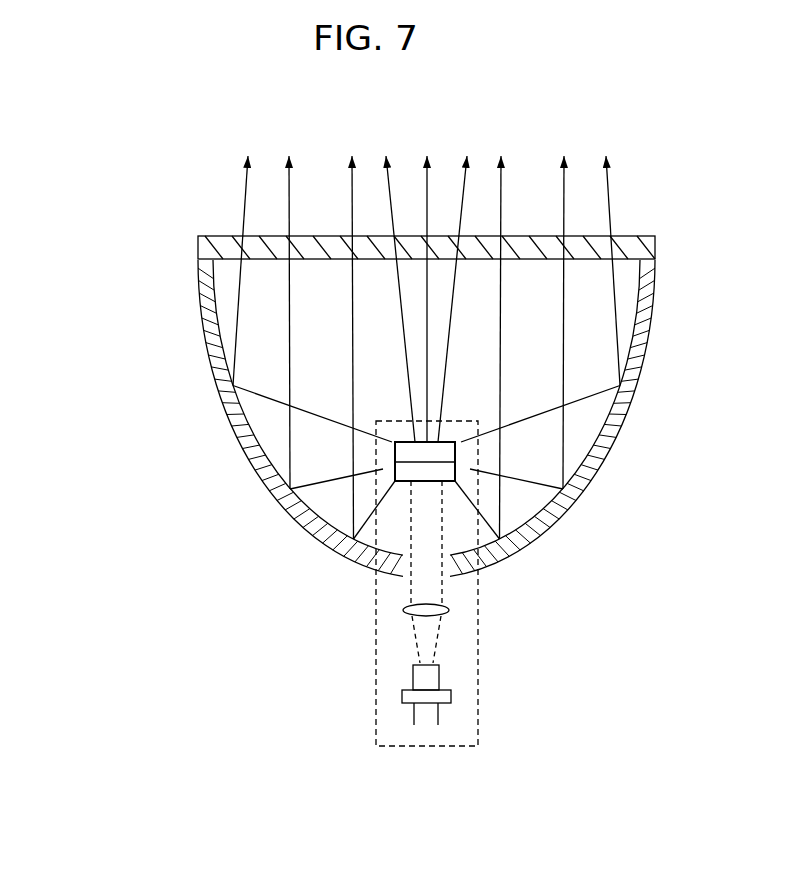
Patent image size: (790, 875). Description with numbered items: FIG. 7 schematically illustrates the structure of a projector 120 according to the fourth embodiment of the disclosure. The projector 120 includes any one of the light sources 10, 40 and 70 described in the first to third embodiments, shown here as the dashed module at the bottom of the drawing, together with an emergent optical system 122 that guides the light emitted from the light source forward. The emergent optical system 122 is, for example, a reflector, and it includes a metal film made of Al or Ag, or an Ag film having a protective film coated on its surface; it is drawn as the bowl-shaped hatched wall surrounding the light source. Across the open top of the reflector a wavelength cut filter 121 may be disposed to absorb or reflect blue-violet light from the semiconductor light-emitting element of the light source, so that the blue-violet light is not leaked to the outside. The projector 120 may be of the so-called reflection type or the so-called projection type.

The projector 120 is at (127, 453).
The wavelength cut filter 121 is at (207, 247).
The emergent optical system 122 is at (555, 502).
The light source 10 is at (330, 583).
The light source 40 is at (330, 583).
The light source 70 is at (377, 598).